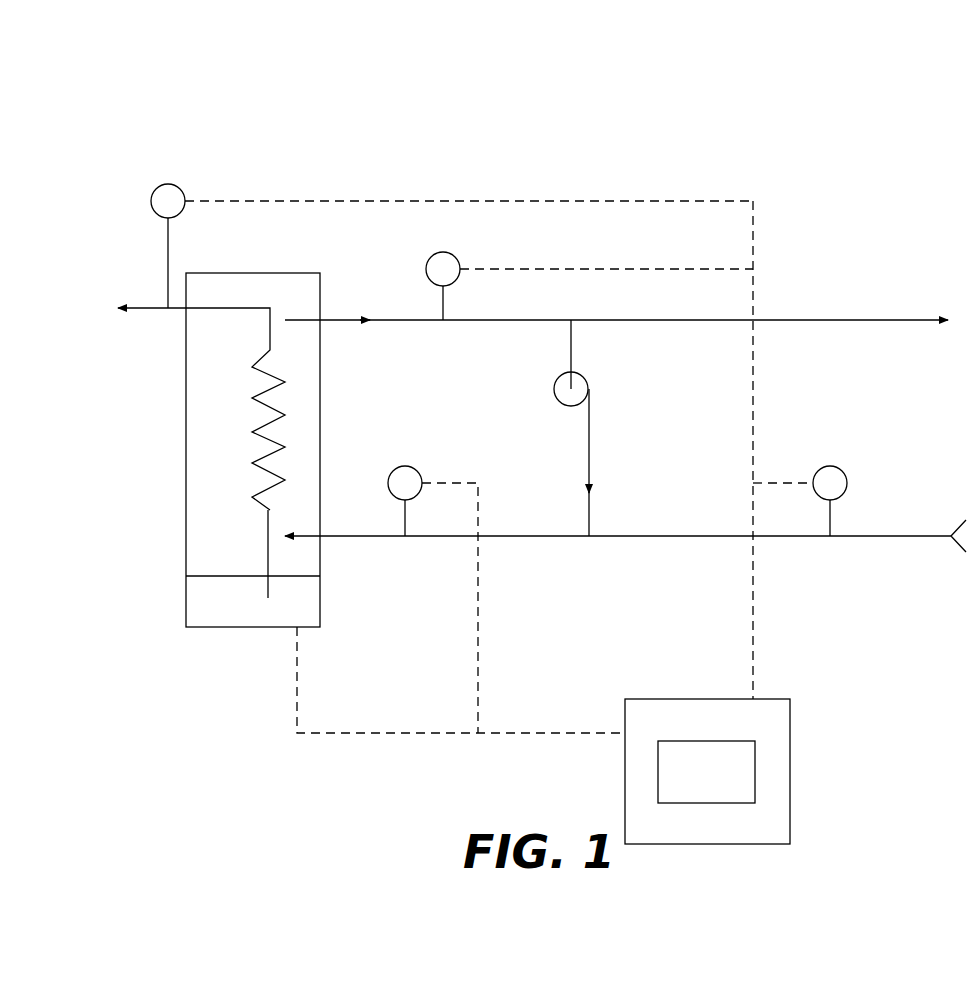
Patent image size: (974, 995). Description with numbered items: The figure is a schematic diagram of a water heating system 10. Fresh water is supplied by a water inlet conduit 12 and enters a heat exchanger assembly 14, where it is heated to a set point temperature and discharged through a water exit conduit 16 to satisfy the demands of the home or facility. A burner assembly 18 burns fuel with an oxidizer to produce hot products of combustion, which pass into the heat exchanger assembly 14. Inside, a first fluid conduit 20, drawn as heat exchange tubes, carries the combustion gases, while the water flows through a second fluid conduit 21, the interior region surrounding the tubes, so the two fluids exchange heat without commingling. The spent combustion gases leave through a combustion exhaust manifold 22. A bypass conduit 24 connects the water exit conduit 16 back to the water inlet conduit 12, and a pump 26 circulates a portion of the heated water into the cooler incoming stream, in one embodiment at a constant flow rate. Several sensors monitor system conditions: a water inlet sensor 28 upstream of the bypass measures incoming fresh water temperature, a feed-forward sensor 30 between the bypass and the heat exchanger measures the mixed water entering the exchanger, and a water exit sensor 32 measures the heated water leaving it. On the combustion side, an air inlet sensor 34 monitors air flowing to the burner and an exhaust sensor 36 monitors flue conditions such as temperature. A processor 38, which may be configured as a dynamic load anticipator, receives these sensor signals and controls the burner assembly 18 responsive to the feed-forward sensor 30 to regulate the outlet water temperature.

The water heating system 10 is at (112, 176).
The water inlet conduit 12 is at (915, 538).
The heat exchanger assembly 14 is at (258, 273).
The water exit conduit 16 is at (885, 317).
The burner assembly 18 is at (186, 607).
The first fluid conduit 20 is at (285, 442).
The second fluid conduit 21 is at (179, 372).
The combustion exhaust manifold 22 is at (130, 308).
The bypass conduit 24 is at (593, 460).
The pump 26 is at (553, 392).
The water inlet sensor 28 is at (835, 467).
The feed-forward sensor 30 is at (408, 467).
The water exit sensor 32 is at (448, 253).
The air inlet sensor 34 is at (268, 593).
The exhaust sensor 36 is at (175, 185).
The processor 38 is at (790, 776).